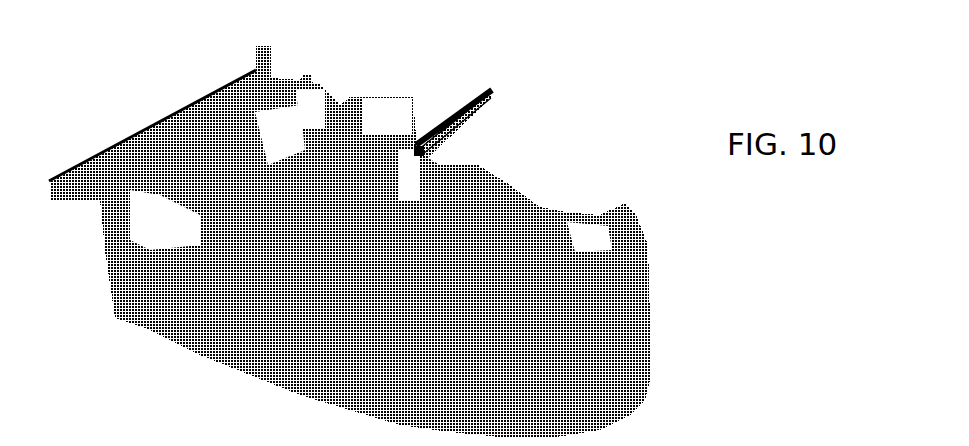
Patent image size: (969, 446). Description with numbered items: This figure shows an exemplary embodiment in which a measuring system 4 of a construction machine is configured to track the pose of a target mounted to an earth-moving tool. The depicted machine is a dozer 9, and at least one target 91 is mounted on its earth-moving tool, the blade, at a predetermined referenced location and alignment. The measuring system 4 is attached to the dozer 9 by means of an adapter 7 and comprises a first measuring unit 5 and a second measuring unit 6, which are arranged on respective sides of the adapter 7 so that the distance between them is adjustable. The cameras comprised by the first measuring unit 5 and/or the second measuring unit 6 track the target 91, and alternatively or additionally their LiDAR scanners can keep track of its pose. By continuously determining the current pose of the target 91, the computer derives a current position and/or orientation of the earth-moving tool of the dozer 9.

The dozer 9 is at (126, 50).
The target 91 is at (92, 209).
The measuring system 4 is at (495, 128).
The first measuring unit 5 is at (487, 102).
The second measuring unit 6 is at (421, 151).
The adapter 7 is at (474, 116).